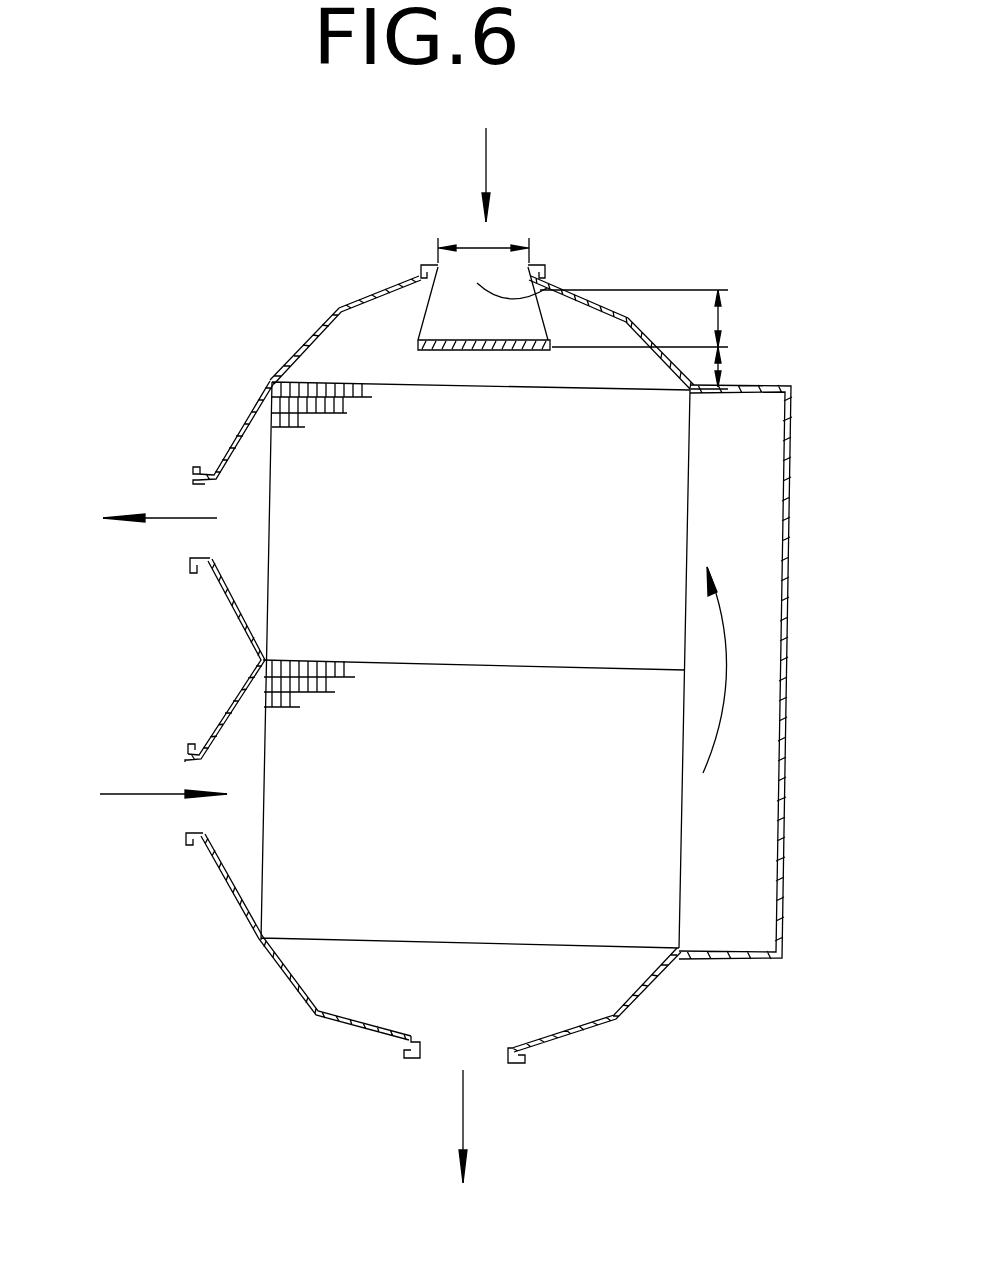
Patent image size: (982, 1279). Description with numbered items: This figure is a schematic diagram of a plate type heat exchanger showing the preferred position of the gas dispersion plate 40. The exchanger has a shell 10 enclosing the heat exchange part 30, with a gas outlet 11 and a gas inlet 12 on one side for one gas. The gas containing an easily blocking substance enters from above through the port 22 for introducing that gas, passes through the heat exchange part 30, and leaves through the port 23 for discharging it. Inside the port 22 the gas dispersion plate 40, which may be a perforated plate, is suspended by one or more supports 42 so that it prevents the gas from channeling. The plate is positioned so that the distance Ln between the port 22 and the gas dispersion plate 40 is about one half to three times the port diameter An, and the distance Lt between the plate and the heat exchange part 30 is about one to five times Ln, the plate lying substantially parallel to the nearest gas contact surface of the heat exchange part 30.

The shell 10 is at (790, 498).
The heat exchange part 30 is at (670, 533).
The gas dispersion plate 40 is at (420, 335).
The support of the dispersion plate 42 is at (423, 310).
The port for introducing a gas containing an easily blocking substance 22 is at (547, 288).
The gas outlet 11 is at (190, 500).
The gas inlet 12 is at (187, 808).
The port for discharging a gas containing the easily blocking substance 23 is at (480, 1053).